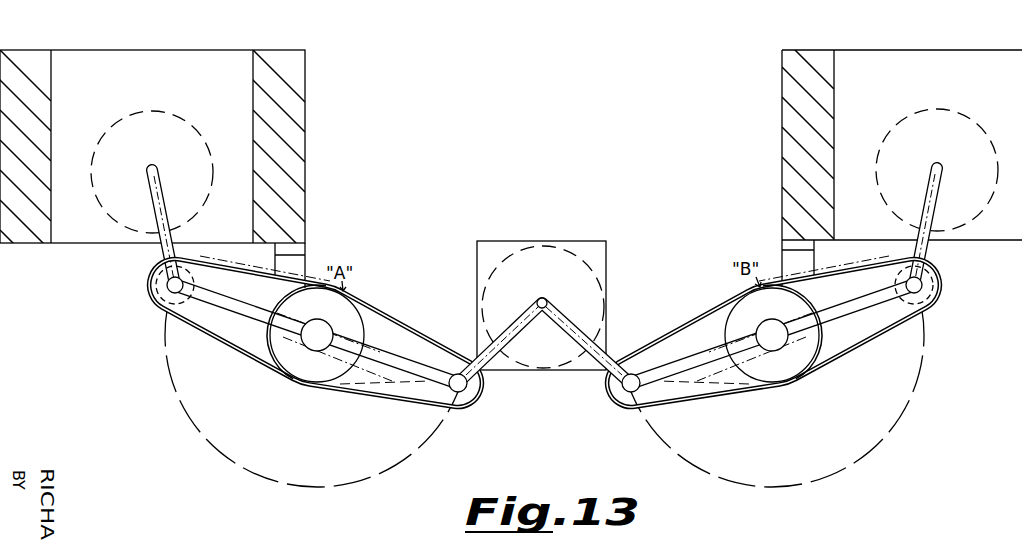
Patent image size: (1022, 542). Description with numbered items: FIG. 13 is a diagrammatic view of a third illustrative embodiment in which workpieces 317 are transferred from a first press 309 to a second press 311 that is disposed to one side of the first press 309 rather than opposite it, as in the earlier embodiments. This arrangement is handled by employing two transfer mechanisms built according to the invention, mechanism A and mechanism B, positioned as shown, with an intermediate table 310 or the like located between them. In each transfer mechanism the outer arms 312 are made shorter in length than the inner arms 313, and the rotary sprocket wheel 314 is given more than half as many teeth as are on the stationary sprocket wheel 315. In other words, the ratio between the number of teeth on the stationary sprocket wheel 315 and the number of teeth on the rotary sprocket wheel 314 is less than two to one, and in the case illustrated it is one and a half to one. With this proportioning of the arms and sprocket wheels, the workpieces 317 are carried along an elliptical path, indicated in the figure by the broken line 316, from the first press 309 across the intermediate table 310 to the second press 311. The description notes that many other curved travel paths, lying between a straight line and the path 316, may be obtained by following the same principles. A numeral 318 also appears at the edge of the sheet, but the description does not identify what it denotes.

The first press 309 is at (87, 50).
The second press 311 is at (990, 50).
The intermediate table 310 is at (594, 241).
The workpieces 317 is at (110, 128).
The outer arms 312 is at (521, 327).
The inner arms 313 is at (414, 380).
The rotary sprocket wheel 314 is at (457, 405).
The stationary sprocket wheel 315 is at (290, 364).
The broken line 316 is at (206, 308).
The element 318 is at (661, 537).